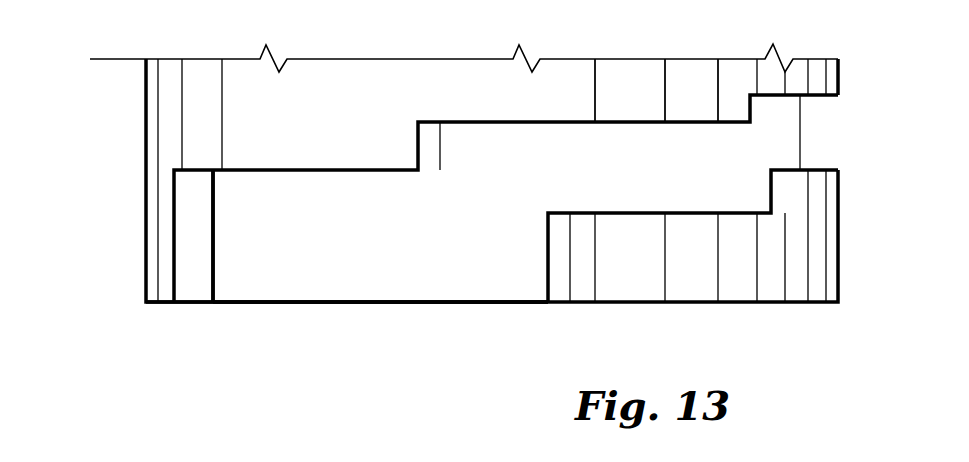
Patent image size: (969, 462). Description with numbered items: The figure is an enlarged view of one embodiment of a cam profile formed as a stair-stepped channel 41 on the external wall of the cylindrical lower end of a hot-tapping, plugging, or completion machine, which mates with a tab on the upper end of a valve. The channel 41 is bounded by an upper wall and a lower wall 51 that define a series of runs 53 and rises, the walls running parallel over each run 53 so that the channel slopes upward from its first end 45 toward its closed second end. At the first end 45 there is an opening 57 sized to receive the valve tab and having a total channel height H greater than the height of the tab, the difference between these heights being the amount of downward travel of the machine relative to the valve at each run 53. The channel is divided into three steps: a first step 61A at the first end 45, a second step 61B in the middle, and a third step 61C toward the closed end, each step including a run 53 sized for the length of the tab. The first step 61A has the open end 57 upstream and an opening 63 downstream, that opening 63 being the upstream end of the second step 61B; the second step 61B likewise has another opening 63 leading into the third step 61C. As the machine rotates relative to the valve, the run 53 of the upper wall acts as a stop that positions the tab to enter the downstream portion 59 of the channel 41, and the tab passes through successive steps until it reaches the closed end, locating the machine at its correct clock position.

The stair-stepped channel 41 is at (138, 150).
The first end 45 is at (487, 347).
The lower wall 51 is at (681, 214).
The run 53 is at (543, 333).
The opening 57 is at (307, 303).
The downstream portion 59 is at (620, 145).
The first step 61A is at (295, 243).
The second step 61B is at (550, 172).
The third step 61C is at (812, 142).
The opening 63 is at (520, 178).
The channel height H is at (242, 228).